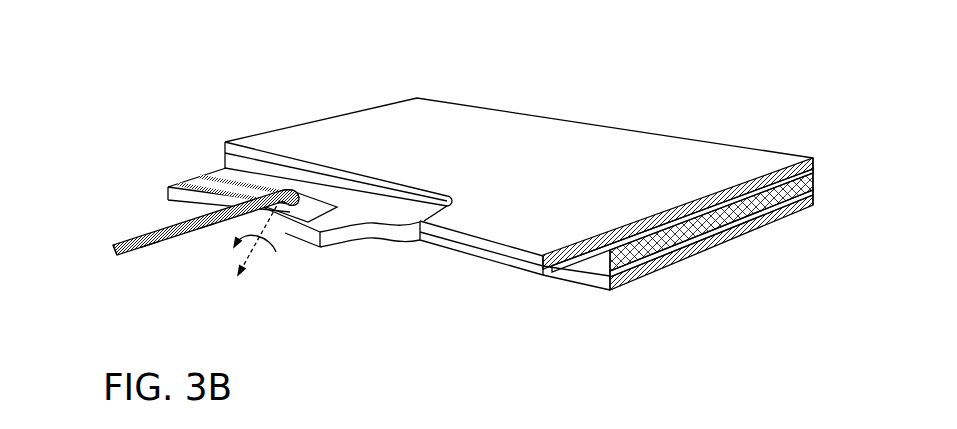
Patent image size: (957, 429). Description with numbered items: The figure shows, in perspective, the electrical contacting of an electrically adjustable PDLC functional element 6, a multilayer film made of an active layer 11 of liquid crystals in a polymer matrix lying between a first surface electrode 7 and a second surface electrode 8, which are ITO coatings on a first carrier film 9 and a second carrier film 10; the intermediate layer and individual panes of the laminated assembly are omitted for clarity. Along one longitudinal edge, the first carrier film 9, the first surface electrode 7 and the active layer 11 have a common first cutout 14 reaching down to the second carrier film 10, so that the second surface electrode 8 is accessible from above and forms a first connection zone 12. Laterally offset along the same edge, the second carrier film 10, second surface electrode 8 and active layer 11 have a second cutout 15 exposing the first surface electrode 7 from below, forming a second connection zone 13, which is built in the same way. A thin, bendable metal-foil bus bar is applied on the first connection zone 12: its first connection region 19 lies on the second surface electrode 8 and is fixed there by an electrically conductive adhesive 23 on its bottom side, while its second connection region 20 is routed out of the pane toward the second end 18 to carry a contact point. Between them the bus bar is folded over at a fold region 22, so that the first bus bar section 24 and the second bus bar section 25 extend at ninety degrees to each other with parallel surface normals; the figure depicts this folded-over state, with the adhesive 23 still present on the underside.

The functional element 6 is at (595, 92).
The first surface electrode 7 is at (813, 169).
The second surface electrode 8 is at (813, 196).
The first carrier film 9 is at (813, 158).
The second carrier film 10 is at (813, 205).
The active layer 11 is at (813, 180).
The first connection zone 12 is at (373, 247).
The second connection zone 13 is at (577, 287).
The first cutout 14 is at (218, 156).
The second cutout 15 is at (477, 267).
The second end 18 is at (112, 253).
The first connection region 19 is at (213, 183).
The second connection region 20 is at (150, 248).
The fold region 22 is at (273, 193).
The adhesive 23 is at (182, 223).
The first bus bar section 24 is at (208, 230).
The second bus bar section 25 is at (305, 208).